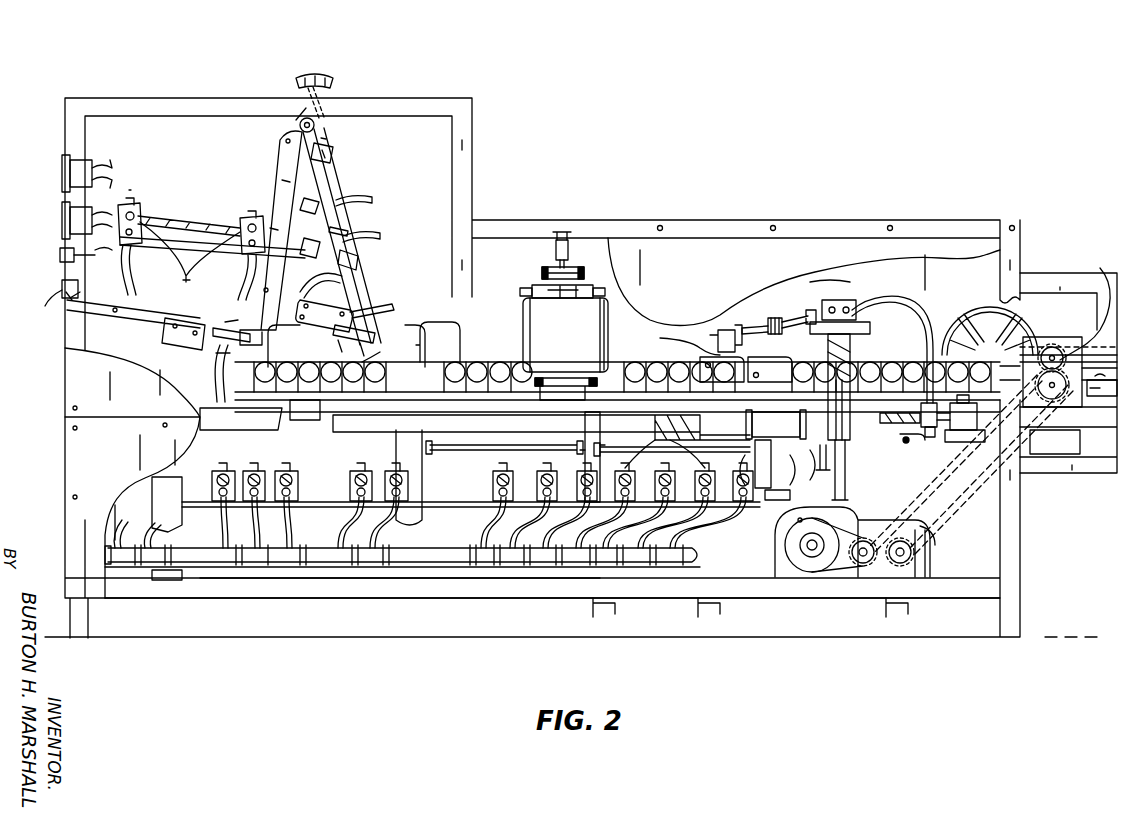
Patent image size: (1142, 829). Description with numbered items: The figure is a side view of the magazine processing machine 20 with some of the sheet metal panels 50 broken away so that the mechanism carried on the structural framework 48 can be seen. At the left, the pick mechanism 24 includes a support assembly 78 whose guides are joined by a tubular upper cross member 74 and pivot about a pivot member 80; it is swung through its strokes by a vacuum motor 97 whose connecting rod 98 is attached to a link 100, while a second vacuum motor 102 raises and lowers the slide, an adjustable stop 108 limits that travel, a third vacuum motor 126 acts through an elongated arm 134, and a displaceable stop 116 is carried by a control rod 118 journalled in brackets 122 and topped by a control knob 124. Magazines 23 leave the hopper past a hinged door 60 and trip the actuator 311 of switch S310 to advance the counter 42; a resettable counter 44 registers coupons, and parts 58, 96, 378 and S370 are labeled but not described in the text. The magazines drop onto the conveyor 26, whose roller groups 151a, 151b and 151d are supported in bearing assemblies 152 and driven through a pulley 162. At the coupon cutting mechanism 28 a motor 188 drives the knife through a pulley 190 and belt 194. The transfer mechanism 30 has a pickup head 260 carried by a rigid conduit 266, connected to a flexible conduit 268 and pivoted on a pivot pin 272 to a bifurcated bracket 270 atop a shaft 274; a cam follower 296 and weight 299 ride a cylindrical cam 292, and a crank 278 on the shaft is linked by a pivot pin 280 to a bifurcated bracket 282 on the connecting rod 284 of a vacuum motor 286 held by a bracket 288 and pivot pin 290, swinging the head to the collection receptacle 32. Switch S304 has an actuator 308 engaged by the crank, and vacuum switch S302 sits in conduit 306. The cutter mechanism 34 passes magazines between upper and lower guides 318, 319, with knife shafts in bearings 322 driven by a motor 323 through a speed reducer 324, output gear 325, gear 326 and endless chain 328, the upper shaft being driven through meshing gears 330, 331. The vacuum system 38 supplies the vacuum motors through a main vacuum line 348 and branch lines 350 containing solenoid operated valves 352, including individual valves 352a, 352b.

The magazine processing machine 20 is at (51, 73).
The sheet metal panels 50 is at (75, 440).
The counter 42 is at (70, 172).
The resettable counter 44 is at (70, 218).
The switch 378 is at (60, 255).
The switch S370 is at (58, 293).
The control knob 124 is at (313, 72).
The tubular upper cross member 74 is at (300, 118).
The pivot member 80 is at (316, 126).
The support assembly 78 is at (335, 188).
The brackets 122 is at (334, 153).
The control rod 118 is at (335, 175).
The second vacuum motor 102 is at (335, 212).
The adjustable stop 108 is at (345, 258).
The connecting rod 98 is at (282, 205).
The link 100 is at (312, 242).
The third vacuum motor 126 is at (308, 284).
The elongated arm 134 is at (352, 308).
The displaceable stop 116 is at (394, 306).
The pick mechanism 24 is at (392, 278).
The vacuum motor 97 is at (194, 212).
The valve 352b is at (134, 202).
The valve 352a is at (252, 216).
The switch S310 is at (250, 305).
The arm 58 is at (210, 349).
The door 60 is at (232, 328).
The tube 96 is at (229, 351).
The actuator 311 is at (272, 340).
The first group of rollers 151a is at (368, 357).
The second group of rollers 151b is at (441, 352).
The bearing assemblies 152 is at (392, 376).
The conveyor 26 is at (502, 352).
The fourth group of rollers 151d is at (921, 353).
The pulley 190 is at (556, 262).
The belt 194 is at (542, 269).
The coupon cutting mechanism 28 is at (510, 296).
The motor 188 is at (565, 349).
The transfer mechanism 30 is at (848, 272).
The bifurcated bracket 270 is at (820, 282).
The magazines 23 is at (676, 340).
The pickup head 260 is at (718, 345).
The rigid conduit 266 is at (755, 326).
The cam follower 296 is at (785, 318).
The weight 299 is at (785, 318).
The pivot pin 272 is at (848, 302).
The cylindrical cam 292 is at (870, 328).
The shaft 274 is at (852, 343).
The flexible conduit 268 is at (903, 300).
The cutter mechanism 34 is at (1014, 335).
The gear 330 is at (1008, 375).
The bearings 322 is at (1062, 343).
The pulley 162 is at (1025, 318).
The gear 326 is at (1060, 395).
The upper guide 318 is at (1082, 352).
The gear 331 is at (1085, 305).
The lower guide 319 is at (1101, 385).
The endless chain 328 is at (1050, 432).
The pivot pin 290 is at (700, 425).
The collection receptacle 32 is at (670, 430).
The solenoid operated valves 352 is at (305, 461).
The bracket 288 is at (712, 452).
The branch vacuum lines 350 is at (470, 565).
The main vacuum line 348 is at (325, 562).
The structural framework 48 is at (216, 596).
The vacuum system 38 is at (631, 576).
The vacuum motor 286 is at (776, 424).
The bifurcated bracket 282 is at (805, 455).
The connecting rod 284 is at (803, 487).
The pivot pin 280 is at (847, 470).
The crank 278 is at (848, 458).
The actuator 308 is at (903, 438).
The switch S304 is at (933, 474).
The vacuum switch S302 is at (975, 458).
The conduit 306 is at (950, 480).
The motor 323 is at (775, 548).
The output gear 325 is at (862, 568).
The speed reducer 324 is at (930, 572).